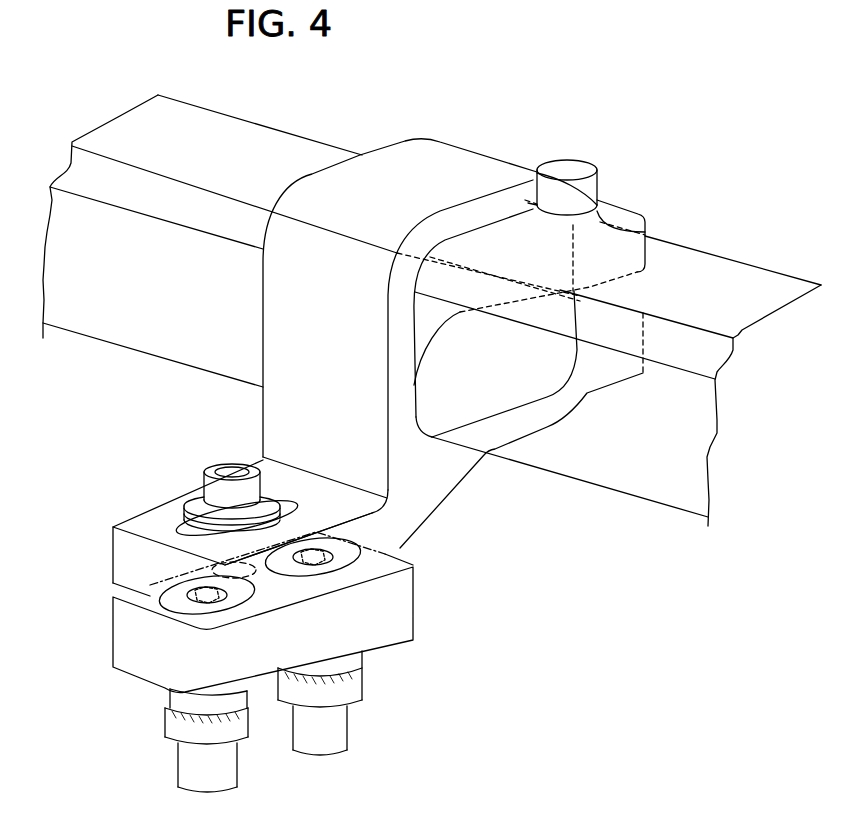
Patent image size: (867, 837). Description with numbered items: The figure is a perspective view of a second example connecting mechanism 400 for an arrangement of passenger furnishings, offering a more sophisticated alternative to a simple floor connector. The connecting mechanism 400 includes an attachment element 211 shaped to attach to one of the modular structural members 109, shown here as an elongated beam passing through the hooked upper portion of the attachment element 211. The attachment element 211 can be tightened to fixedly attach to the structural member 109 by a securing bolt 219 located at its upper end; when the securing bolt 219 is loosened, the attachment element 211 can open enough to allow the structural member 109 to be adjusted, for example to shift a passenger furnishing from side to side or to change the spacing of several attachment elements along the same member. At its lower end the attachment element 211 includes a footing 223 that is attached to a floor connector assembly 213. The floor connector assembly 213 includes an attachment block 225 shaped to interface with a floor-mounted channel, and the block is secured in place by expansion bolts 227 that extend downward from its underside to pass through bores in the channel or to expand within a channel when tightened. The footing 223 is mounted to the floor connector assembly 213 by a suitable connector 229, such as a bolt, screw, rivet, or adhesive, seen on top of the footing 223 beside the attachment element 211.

The connecting mechanism 400 is at (597, 53).
The modular structural member 109 is at (171, 274).
The attachment element 211 is at (443, 162).
The securing bolt 219 is at (590, 163).
The floor connector assembly 213 is at (430, 597).
The footing 223 is at (115, 527).
The attachment block 225 is at (128, 655).
The expansion bolts 227 is at (187, 773).
The connector 229 is at (204, 489).